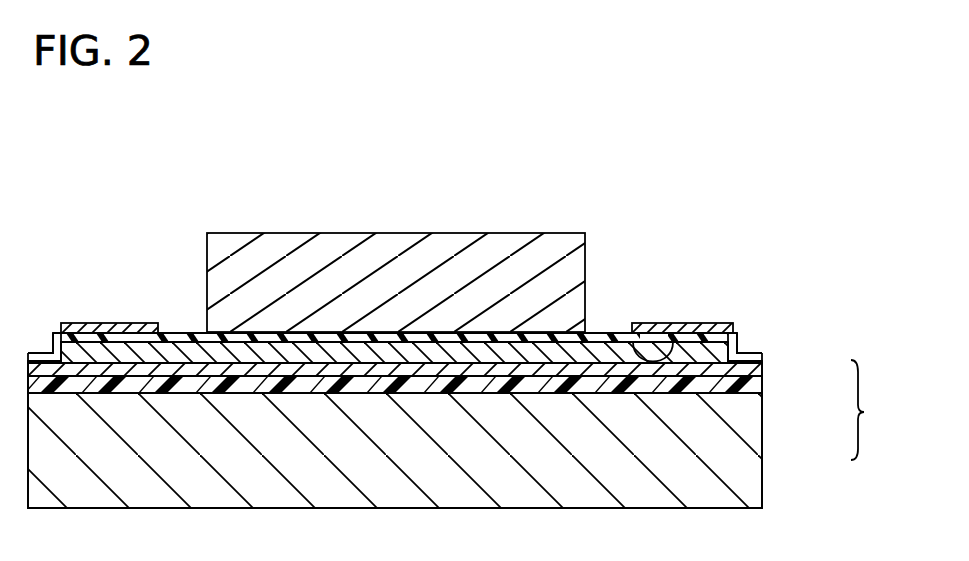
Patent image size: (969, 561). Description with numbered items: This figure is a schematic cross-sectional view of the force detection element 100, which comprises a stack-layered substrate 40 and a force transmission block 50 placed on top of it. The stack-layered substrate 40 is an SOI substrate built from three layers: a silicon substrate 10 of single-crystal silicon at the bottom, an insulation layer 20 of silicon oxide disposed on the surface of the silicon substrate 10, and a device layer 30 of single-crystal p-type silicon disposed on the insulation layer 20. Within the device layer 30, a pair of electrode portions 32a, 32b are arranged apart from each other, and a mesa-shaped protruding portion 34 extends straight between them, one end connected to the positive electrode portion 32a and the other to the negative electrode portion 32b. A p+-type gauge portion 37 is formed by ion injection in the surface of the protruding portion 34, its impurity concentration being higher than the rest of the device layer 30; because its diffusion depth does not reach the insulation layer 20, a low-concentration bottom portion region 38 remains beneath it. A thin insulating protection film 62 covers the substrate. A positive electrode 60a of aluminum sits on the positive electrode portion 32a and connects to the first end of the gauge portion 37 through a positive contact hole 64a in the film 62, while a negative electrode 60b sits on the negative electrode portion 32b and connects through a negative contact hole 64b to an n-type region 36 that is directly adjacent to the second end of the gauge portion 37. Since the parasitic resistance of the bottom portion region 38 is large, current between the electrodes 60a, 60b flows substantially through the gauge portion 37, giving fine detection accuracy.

The force detection element 100 is at (626, 118).
The silicon substrate 10 is at (745, 437).
The insulation layer 20 is at (757, 390).
The device layer 30 is at (750, 372).
The stack-layered substrate 40 is at (873, 410).
The force transmission block 50 is at (447, 253).
The protruding portion 34 is at (535, 318).
The n-type region 36 is at (612, 337).
The gauge portion 37 is at (352, 347).
The bottom portion region 38 is at (290, 367).
The positive electrode 60a is at (88, 327).
The negative electrode 60b is at (693, 325).
The positive contact hole 64a is at (137, 337).
The negative contact hole 64b is at (645, 330).
The positive electrode portion 32a is at (50, 353).
The negative electrode portion 32b is at (722, 327).
The insulating protection film 62 is at (740, 340).